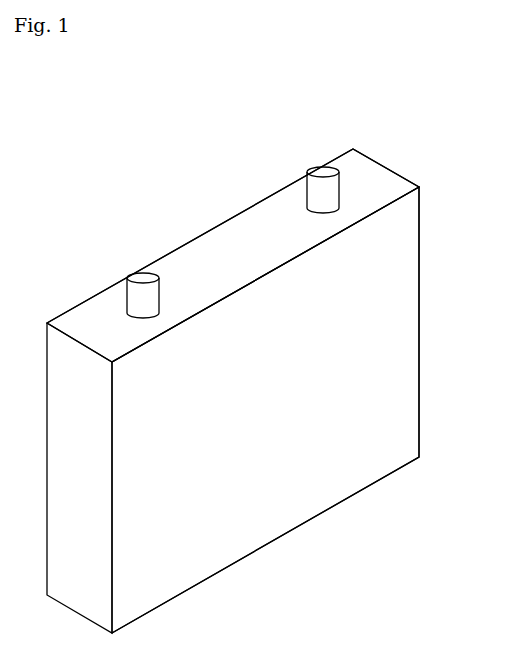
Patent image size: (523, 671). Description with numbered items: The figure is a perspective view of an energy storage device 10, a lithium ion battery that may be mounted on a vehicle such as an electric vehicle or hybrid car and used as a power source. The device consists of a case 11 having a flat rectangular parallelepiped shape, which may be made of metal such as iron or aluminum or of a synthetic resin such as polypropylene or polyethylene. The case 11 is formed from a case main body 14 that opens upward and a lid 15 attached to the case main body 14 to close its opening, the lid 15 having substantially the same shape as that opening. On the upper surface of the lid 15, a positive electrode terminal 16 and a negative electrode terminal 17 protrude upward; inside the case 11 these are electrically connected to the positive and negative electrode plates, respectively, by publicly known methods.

The energy storage device 10 is at (464, 136).
The case 11 is at (405, 263).
The case main body 14 is at (392, 343).
The lid 15 is at (241, 232).
The positive electrode terminal 16 is at (322, 168).
The negative electrode terminal 17 is at (146, 273).